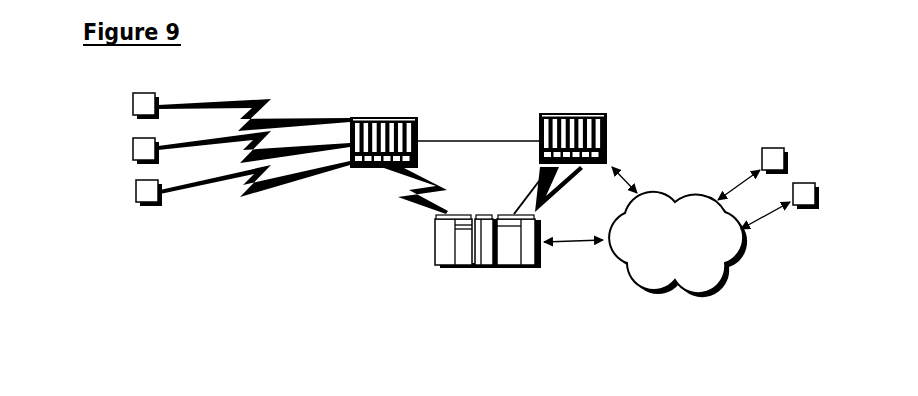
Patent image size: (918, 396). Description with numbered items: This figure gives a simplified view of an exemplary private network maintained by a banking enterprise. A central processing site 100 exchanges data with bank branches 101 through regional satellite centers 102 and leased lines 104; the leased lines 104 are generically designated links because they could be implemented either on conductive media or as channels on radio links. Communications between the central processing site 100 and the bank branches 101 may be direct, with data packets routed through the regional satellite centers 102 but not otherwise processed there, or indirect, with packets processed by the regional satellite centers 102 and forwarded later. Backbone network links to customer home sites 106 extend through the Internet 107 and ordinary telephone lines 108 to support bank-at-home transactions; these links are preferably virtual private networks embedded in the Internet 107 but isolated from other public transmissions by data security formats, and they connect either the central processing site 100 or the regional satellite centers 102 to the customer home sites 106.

The central processing site 100 is at (427, 251).
The bank branches 101 is at (133, 107).
The regional satellite centers 102 is at (534, 118).
The leased lines 104 is at (398, 202).
The customer home sites 106 is at (808, 173).
The Internet 107 is at (660, 192).
The telephone lines 108 is at (768, 242).